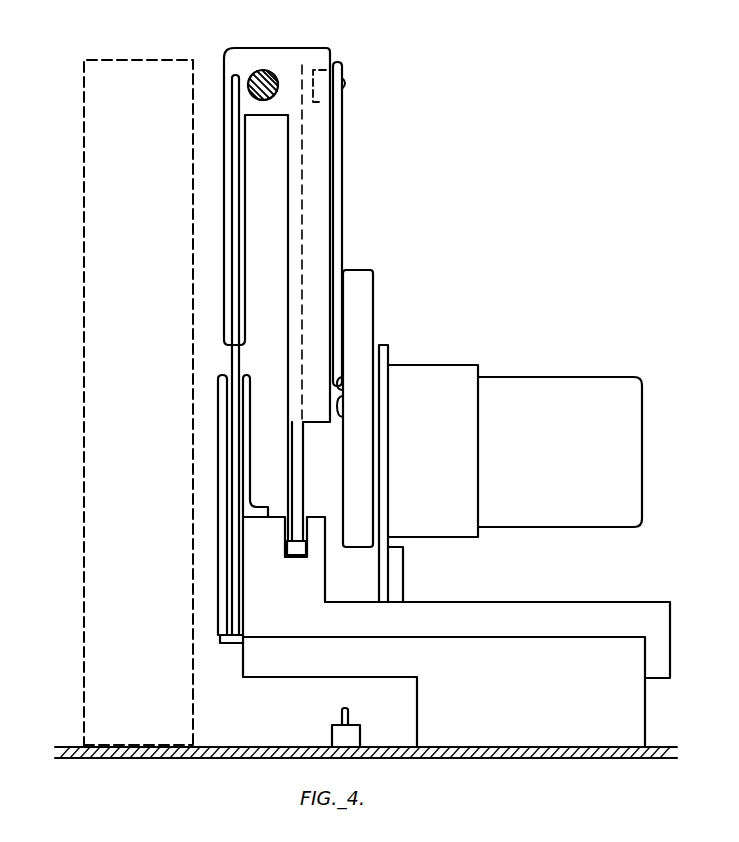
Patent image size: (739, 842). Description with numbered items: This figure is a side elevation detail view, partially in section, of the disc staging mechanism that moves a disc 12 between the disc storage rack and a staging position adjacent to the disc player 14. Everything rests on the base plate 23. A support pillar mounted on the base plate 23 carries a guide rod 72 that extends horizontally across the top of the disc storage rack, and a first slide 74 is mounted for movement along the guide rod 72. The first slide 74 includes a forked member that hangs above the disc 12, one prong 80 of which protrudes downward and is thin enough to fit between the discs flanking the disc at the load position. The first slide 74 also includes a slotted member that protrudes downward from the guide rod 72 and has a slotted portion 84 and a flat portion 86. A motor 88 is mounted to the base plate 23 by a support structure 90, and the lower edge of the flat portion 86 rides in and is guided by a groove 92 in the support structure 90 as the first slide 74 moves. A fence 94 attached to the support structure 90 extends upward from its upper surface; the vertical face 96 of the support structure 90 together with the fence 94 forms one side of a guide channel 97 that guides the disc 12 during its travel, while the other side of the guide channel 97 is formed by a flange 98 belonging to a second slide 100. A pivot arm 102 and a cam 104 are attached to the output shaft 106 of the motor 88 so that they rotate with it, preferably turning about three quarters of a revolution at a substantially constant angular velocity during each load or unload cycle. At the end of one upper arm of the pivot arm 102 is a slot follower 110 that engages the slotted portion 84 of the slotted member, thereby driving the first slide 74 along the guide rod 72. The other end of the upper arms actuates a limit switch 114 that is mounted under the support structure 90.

The disc 12 is at (232, 243).
The disc player 14 is at (84, 143).
The base plate 23 is at (527, 757).
The guide rod 72 is at (274, 73).
The first slide 74 is at (252, 48).
The prong 80 is at (246, 319).
The slotted portion 84 is at (333, 241).
The flat portion 86 is at (289, 493).
The motor 88 is at (540, 378).
The support structure 90 is at (535, 602).
The groove 92 is at (303, 546).
The fence 94 is at (270, 394).
The vertical face 96 is at (243, 543).
The guide channel 97 is at (272, 423).
The flange 98 is at (218, 447).
The second slide 100 is at (213, 648).
The pivot arm 102 is at (345, 201).
The cam 104 is at (374, 301).
The output shaft 106 is at (340, 427).
The slot follower 110 is at (334, 58).
The limit switch 114 is at (332, 733).